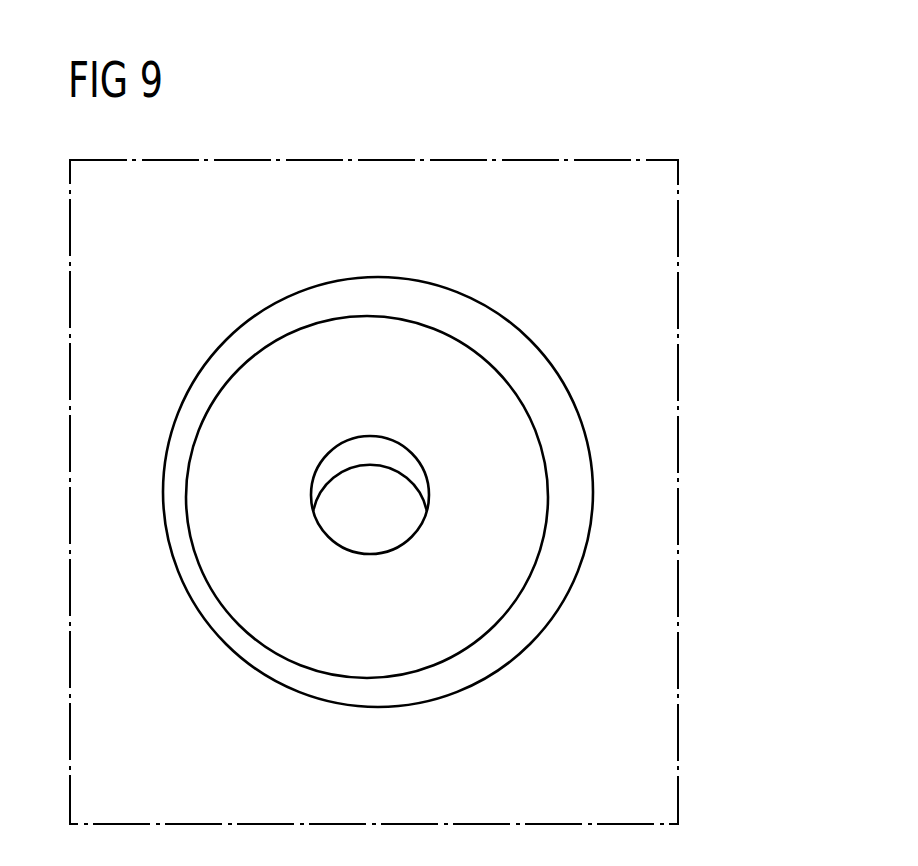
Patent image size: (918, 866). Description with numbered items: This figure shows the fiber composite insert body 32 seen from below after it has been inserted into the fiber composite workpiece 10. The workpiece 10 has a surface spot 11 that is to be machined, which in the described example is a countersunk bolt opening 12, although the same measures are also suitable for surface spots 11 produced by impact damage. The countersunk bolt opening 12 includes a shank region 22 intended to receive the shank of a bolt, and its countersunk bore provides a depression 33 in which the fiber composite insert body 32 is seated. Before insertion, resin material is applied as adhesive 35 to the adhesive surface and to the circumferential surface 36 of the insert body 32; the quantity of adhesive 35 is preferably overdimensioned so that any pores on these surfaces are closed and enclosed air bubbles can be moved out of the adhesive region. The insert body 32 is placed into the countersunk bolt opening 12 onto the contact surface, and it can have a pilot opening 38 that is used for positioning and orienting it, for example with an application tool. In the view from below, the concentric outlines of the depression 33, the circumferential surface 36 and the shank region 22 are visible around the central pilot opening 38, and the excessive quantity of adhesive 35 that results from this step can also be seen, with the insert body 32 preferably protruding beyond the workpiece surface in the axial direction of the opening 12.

The fiber composite workpiece 10 is at (611, 151).
The surface spot 11 is at (589, 300).
The countersunk bolt opening 12 is at (185, 525).
The shank region 22 is at (170, 492).
The fiber composite insert body 32 is at (294, 350).
The depression 33 is at (472, 308).
The adhesive 35 is at (262, 377).
The circumferential surface 36 is at (225, 410).
The pilot opening 38 is at (408, 522).